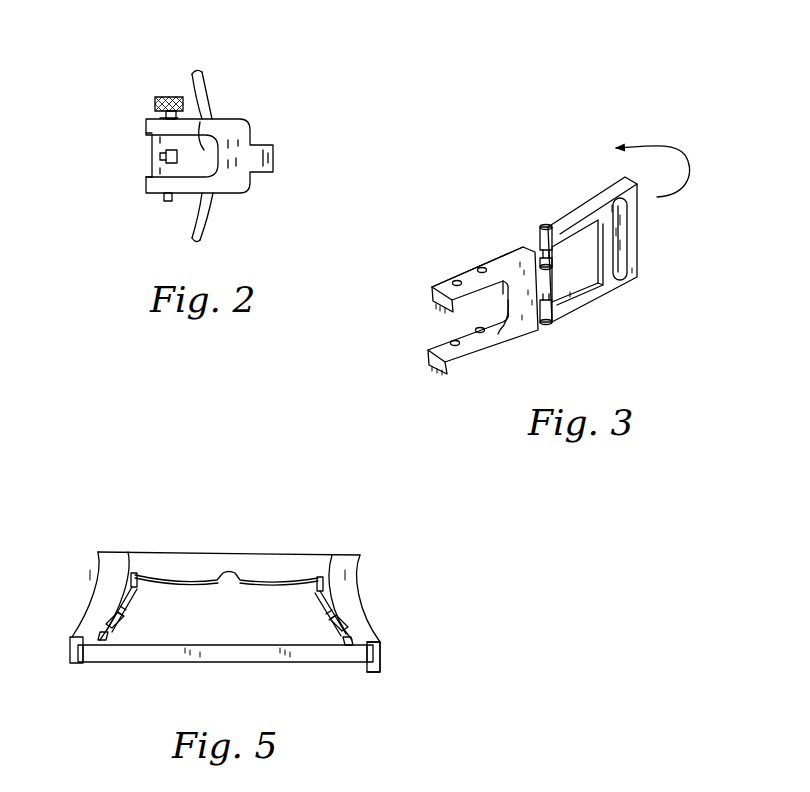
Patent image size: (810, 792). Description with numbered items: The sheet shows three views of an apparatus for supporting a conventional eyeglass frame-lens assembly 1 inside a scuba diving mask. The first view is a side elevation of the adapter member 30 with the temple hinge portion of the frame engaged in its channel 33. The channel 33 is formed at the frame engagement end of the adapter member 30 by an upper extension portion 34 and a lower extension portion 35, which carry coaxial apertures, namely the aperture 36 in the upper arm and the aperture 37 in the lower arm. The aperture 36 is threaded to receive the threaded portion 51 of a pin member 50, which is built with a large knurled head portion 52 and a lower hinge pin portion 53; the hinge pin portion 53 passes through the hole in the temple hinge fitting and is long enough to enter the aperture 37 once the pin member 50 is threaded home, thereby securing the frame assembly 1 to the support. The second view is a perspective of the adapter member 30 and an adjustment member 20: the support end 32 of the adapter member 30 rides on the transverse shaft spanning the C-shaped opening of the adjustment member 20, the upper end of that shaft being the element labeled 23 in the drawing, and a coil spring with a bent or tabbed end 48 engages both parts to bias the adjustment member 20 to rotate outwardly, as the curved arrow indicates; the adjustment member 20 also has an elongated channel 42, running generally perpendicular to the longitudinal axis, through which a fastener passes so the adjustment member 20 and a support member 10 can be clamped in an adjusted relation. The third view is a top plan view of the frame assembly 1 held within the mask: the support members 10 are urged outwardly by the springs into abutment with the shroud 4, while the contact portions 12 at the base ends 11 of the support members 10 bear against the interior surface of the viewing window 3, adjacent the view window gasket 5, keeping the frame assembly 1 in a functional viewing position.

In FIG. 5, the eyeglass frame-lens assembly 1 is at (225, 575).
In FIG. 5, the viewing window 3 is at (212, 660).
In FIG. 5, the shroud 4 is at (353, 582).
In FIG. 5, the view window gasket 5 is at (378, 640).
In FIG. 5, the support member 10 is at (117, 618).
In FIG. 5, the base end 11 is at (98, 657).
In FIG. 5, the contact portion 12 is at (345, 658).
In FIG. 3, the adjustment member 20 is at (639, 284).
In FIG. 5, the adjustment member 20 is at (127, 597).
In FIG. 3, the hinge pin 23 is at (543, 228).
In FIG. 2, the adapter member 30 is at (256, 128).
In FIG. 3, the adapter member 30 is at (426, 276).
In FIG. 5, the adapter member 30 is at (132, 568).
In FIG. 3, the support end 32 is at (507, 262).
In FIG. 2, the channel 33 is at (129, 140).
In FIG. 2, the upper extension portion 34 is at (205, 128).
In FIG. 2, the lower extension portion 35 is at (228, 185).
In FIG. 2, the aperture of upper extension portion 36 is at (160, 117).
In FIG. 2, the aperture of lower extension portion 37 is at (163, 196).
In FIG. 3, the elongated channel 42 is at (622, 245).
In FIG. 3, the tabbed end 48 is at (548, 319).
In FIG. 2, the pin member 50 is at (153, 95).
In FIG. 2, the threaded portion 51 is at (185, 118).
In FIG. 2, the knurled head portion 52 is at (168, 117).
In FIG. 2, the hinge pin portion 53 is at (163, 157).